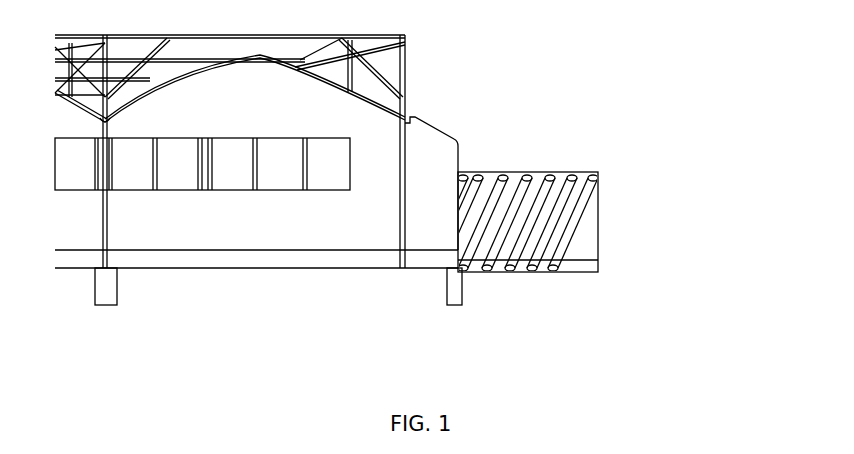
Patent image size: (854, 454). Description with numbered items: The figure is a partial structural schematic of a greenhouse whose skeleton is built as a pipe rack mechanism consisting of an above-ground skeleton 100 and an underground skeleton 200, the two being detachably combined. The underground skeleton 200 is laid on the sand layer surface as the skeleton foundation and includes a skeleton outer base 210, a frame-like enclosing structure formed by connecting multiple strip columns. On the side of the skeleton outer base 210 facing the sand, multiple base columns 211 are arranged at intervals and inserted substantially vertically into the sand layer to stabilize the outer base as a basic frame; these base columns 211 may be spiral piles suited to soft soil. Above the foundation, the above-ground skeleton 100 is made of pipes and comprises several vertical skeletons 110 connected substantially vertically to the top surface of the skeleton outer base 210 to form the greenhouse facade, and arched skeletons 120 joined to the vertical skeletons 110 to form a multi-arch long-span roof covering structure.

The above-ground skeleton 100 is at (605, 15).
The vertical skeleton 110 is at (415, 45).
The arched skeleton 120 is at (371, 99).
The underground skeleton 200 is at (710, 229).
The skeleton outer base 210 is at (457, 260).
The base column 211 is at (462, 298).